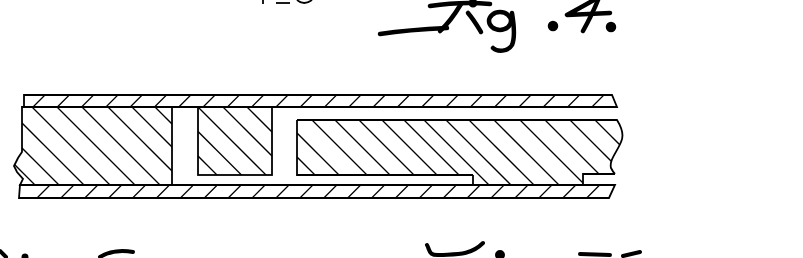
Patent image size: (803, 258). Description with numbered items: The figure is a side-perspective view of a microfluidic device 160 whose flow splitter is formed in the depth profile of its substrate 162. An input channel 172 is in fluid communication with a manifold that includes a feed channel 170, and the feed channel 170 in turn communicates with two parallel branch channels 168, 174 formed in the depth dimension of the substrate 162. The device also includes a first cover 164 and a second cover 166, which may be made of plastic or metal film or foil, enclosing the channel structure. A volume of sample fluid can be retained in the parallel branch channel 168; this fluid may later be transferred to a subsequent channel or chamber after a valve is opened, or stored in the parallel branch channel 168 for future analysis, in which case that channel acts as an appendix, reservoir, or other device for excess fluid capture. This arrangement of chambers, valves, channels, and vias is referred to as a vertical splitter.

The microfluidic device 160 is at (351, 148).
The substrate 162 is at (664, 182).
The first cover 164 is at (437, 96).
The second cover 166 is at (605, 200).
The parallel branch channel 168 is at (413, 183).
The feed channel 170 is at (287, 162).
The input channel 172 is at (222, 182).
The parallel branch channel 174 is at (308, 116).